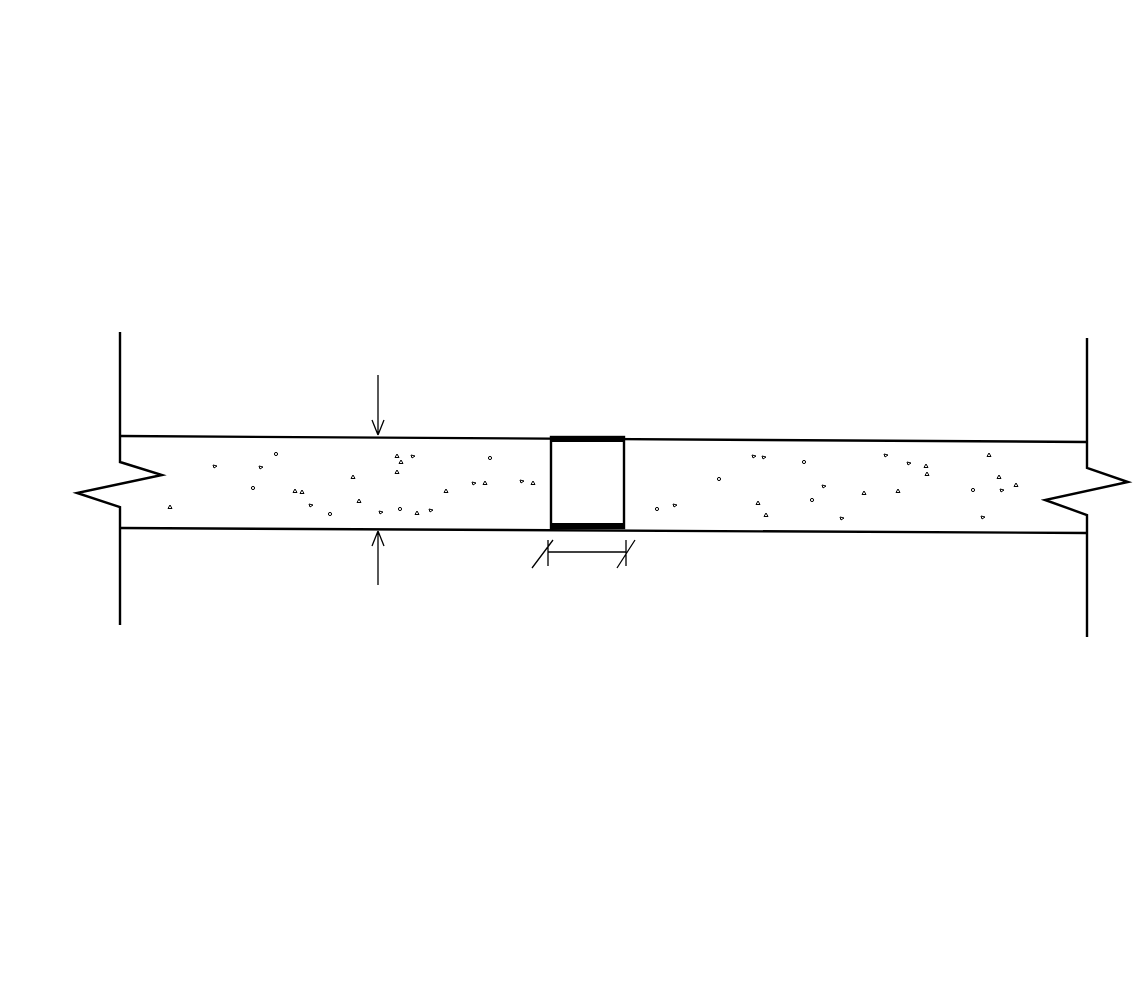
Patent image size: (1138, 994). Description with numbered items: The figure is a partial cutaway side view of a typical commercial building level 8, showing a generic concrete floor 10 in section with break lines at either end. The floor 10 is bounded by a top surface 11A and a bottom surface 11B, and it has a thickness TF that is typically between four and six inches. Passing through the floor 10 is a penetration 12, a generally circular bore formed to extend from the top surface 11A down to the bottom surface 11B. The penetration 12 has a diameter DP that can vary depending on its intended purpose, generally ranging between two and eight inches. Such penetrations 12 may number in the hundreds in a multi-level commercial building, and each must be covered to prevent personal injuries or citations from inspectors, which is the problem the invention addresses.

The prior art floor penetration assembly 8 is at (990, 148).
The concrete floor 10 is at (886, 432).
The top surface 11A is at (215, 435).
The bottom surface 11B is at (218, 529).
The penetration 12 is at (591, 426).
The thickness TF is at (376, 403).
The diameter DP is at (583, 555).